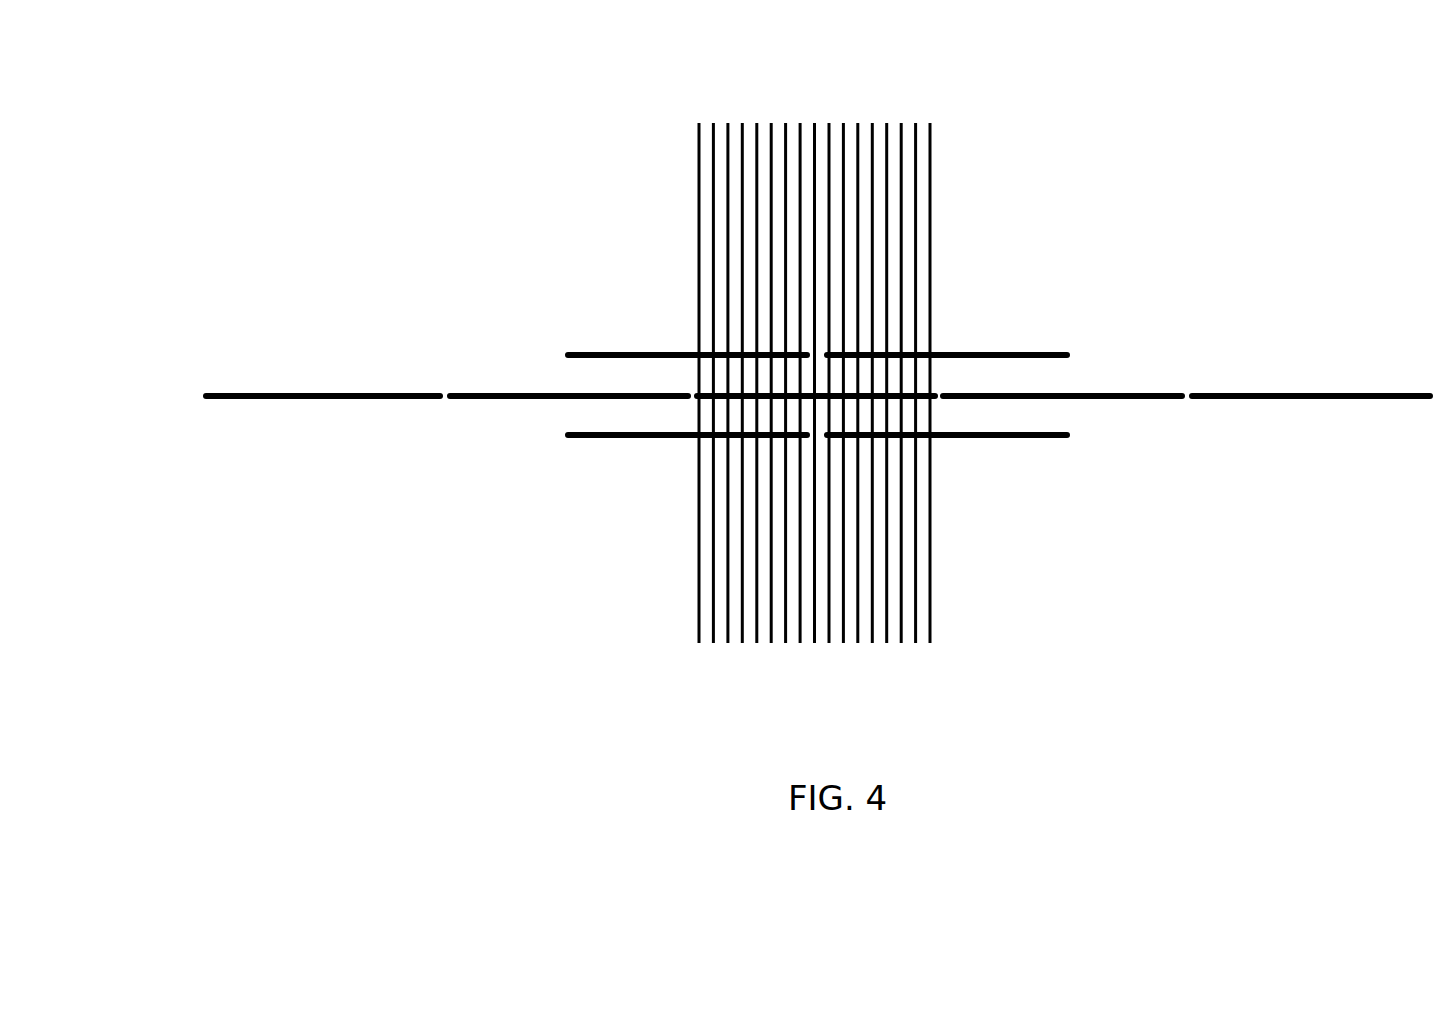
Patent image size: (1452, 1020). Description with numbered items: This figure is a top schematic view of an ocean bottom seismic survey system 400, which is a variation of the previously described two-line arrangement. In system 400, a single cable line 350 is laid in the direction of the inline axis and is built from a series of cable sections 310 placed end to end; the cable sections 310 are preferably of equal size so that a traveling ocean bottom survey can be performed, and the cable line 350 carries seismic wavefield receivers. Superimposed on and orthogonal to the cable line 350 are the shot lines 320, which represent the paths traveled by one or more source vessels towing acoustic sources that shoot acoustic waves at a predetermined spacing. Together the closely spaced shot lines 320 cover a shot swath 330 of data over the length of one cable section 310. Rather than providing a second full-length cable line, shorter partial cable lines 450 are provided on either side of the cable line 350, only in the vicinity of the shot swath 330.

The ocean bottom seismic survey system 400 is at (1303, 749).
The swath 330 is at (930, 110).
The shot lines 320 is at (700, 220).
The cable sections 310 is at (309, 391).
The cable line 350 is at (206, 395).
The partial cable lines 450 is at (568, 355).